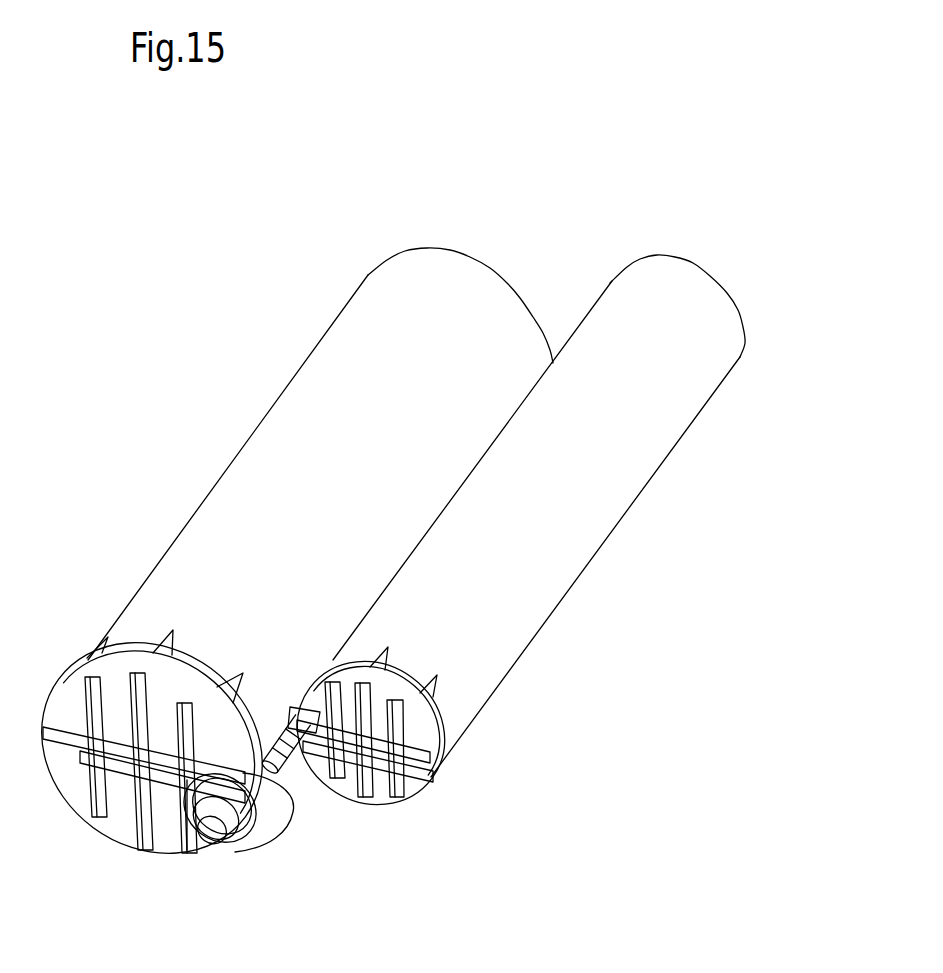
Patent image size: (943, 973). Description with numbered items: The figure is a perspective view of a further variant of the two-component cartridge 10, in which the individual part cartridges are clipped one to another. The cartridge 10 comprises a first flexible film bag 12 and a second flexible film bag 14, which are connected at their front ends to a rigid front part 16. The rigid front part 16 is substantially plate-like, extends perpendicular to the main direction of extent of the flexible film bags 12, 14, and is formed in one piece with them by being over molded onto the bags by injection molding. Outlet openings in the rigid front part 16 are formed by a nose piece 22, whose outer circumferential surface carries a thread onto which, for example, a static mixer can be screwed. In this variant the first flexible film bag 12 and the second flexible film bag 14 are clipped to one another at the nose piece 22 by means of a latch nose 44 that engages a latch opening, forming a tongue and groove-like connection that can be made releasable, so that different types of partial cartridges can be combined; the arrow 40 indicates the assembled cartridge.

The cartridge 10 is at (630, 184).
The cartridge assembly 40 is at (765, 347).
The second flexible film bag 14 is at (280, 440).
The first flexible film bag 12 is at (593, 523).
The rigid front part 16 is at (118, 818).
The nose piece 22 is at (275, 815).
The latch nose 44 is at (303, 743).